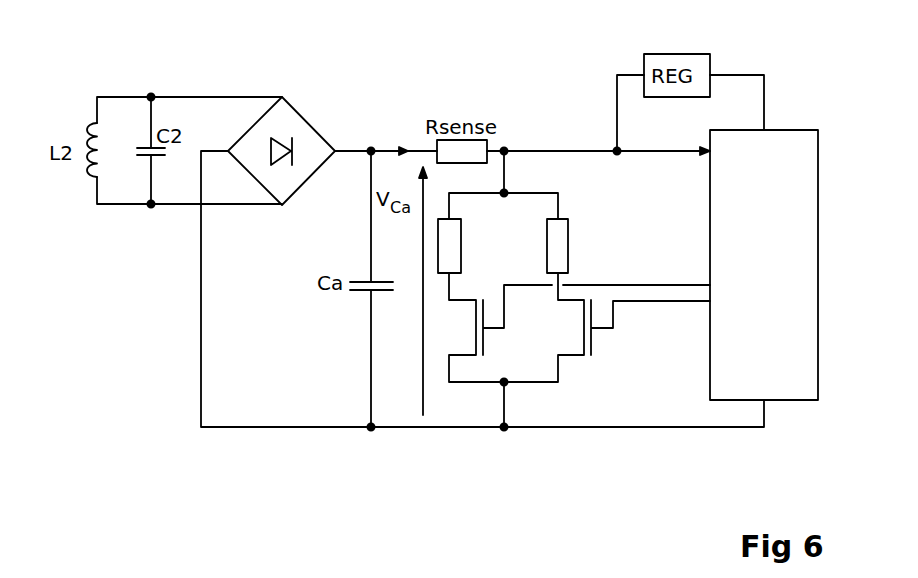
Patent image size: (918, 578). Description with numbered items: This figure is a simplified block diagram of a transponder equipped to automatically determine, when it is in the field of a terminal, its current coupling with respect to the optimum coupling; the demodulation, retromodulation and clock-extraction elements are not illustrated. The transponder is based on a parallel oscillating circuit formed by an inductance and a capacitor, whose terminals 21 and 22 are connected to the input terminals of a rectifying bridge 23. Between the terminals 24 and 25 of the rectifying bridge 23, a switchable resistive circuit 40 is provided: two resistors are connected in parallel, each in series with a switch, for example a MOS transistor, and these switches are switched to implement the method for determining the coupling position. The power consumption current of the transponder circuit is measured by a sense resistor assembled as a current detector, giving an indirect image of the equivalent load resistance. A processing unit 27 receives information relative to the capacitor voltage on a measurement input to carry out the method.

The terminal of the parallel oscillating circuit 21 is at (151, 97).
The terminal of the parallel oscillating circuit 22 is at (151, 204).
The rectifying bridge 23 is at (310, 122).
The terminal of the rectifying bridge 24 is at (371, 151).
The terminal of the rectifying bridge 25 is at (371, 427).
The processing unit 27 is at (795, 130).
The switchable resistive circuit 40 is at (496, 225).